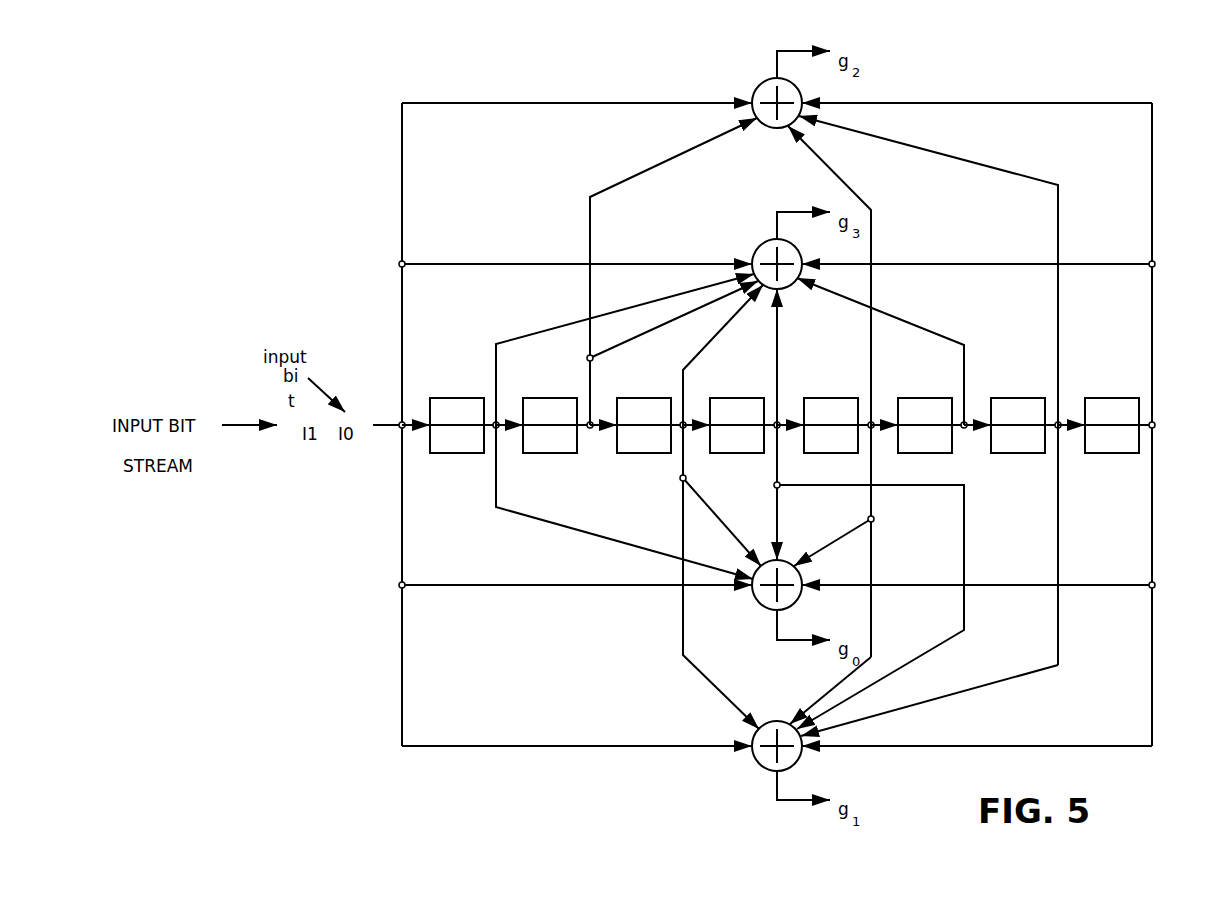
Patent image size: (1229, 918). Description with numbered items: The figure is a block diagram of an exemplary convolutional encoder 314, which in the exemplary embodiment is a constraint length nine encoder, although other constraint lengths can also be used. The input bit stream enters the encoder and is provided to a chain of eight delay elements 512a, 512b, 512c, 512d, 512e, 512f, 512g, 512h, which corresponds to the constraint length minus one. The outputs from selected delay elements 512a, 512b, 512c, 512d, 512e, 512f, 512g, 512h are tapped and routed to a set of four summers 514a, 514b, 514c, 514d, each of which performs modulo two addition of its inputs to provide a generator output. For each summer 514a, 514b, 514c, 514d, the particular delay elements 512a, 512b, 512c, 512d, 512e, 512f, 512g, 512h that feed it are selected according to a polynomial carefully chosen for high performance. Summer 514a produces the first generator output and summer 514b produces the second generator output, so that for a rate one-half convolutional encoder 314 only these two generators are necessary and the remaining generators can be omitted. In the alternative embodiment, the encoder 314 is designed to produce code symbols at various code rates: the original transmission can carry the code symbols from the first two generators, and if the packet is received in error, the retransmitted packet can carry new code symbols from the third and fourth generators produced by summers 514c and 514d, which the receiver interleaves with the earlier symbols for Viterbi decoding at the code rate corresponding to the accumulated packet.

The convolutional encoder 314 is at (1143, 68).
The delay element 512a is at (434, 397).
The delay element 512b is at (527, 397).
The delay element 512c is at (621, 397).
The delay element 512d is at (714, 397).
The delay element 512e is at (808, 397).
The delay element 512f is at (902, 397).
The delay element 512g is at (995, 397).
The delay element 512h is at (1089, 397).
The summer 514a is at (759, 612).
The summer 514b is at (759, 773).
The summer 514c is at (760, 80).
The summer 514d is at (760, 241).